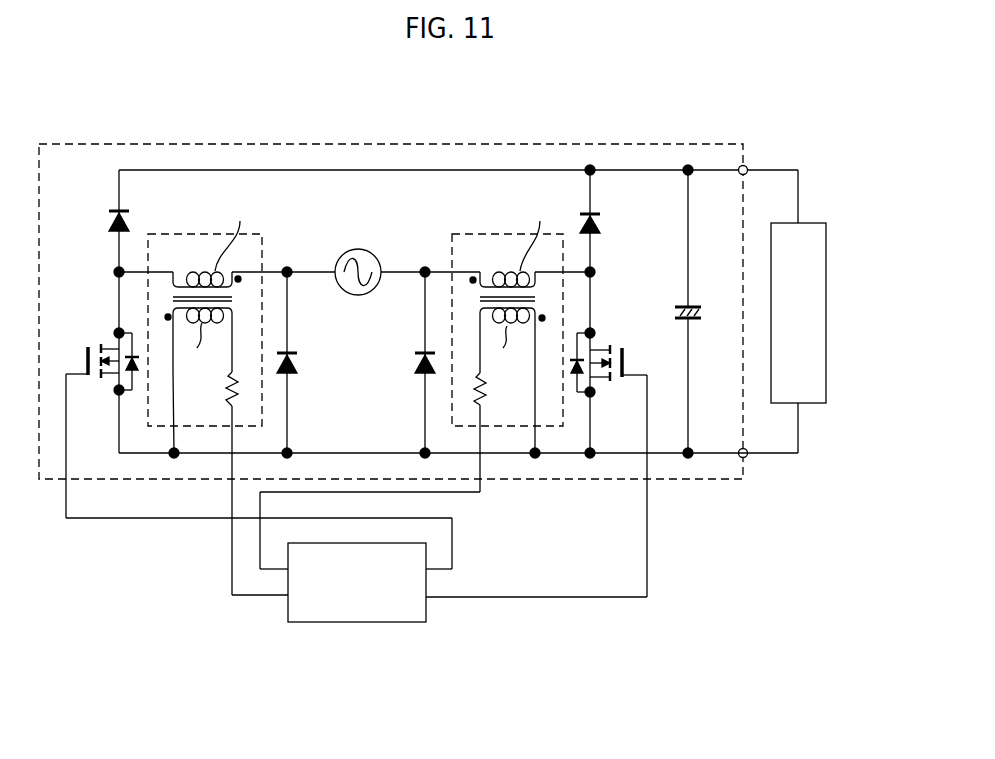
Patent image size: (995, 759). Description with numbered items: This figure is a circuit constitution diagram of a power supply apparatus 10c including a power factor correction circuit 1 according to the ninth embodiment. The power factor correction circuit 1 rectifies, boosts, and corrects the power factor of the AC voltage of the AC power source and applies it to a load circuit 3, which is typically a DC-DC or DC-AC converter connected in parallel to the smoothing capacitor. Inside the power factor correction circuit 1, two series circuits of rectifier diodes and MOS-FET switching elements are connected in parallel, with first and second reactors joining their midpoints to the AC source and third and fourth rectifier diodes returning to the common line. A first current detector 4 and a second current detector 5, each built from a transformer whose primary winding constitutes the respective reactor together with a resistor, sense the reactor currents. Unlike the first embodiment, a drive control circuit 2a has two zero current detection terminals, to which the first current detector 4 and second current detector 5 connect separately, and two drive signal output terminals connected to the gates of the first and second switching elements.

The power supply apparatus 10c is at (88, 106).
The power factor correction circuit 1 is at (191, 144).
The drive control circuit 2a is at (357, 622).
The load circuit 3 is at (826, 273).
The first current detector 4 is at (507, 430).
The second current detector 5 is at (202, 430).